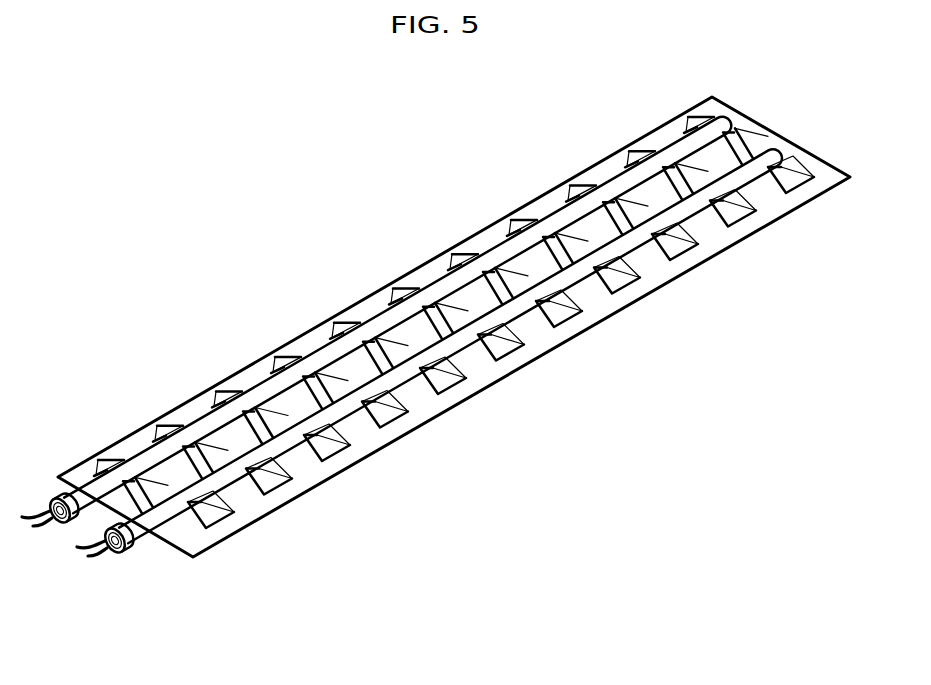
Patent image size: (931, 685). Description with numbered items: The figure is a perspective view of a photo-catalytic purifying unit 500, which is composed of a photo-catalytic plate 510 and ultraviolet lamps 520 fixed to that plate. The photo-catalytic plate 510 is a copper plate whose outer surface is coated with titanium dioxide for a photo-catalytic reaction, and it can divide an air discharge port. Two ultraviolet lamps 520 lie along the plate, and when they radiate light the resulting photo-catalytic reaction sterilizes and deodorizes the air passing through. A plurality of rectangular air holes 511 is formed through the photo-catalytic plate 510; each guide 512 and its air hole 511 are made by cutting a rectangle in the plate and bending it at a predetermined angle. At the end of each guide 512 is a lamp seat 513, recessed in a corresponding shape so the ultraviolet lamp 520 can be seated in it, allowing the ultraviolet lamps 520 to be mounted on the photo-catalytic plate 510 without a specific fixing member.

The photo-catalytic purifying unit 500 is at (436, 385).
The photo-catalytic plate 510 is at (298, 473).
The ultraviolet lamp 520 is at (218, 480).
The air hole 511 is at (548, 320).
The guide 512 is at (622, 276).
The lamp seat 513 is at (755, 210).